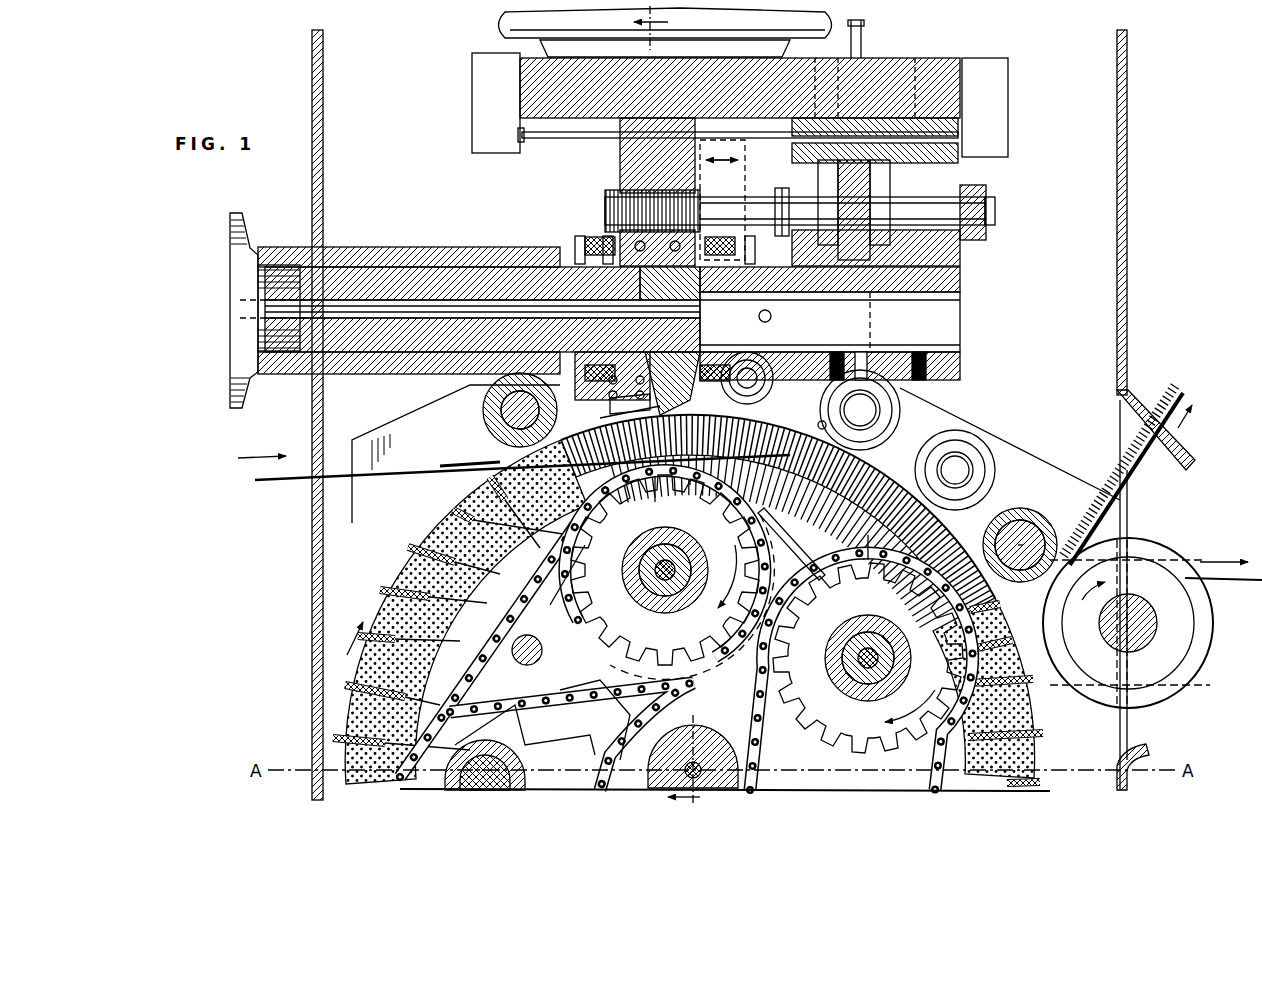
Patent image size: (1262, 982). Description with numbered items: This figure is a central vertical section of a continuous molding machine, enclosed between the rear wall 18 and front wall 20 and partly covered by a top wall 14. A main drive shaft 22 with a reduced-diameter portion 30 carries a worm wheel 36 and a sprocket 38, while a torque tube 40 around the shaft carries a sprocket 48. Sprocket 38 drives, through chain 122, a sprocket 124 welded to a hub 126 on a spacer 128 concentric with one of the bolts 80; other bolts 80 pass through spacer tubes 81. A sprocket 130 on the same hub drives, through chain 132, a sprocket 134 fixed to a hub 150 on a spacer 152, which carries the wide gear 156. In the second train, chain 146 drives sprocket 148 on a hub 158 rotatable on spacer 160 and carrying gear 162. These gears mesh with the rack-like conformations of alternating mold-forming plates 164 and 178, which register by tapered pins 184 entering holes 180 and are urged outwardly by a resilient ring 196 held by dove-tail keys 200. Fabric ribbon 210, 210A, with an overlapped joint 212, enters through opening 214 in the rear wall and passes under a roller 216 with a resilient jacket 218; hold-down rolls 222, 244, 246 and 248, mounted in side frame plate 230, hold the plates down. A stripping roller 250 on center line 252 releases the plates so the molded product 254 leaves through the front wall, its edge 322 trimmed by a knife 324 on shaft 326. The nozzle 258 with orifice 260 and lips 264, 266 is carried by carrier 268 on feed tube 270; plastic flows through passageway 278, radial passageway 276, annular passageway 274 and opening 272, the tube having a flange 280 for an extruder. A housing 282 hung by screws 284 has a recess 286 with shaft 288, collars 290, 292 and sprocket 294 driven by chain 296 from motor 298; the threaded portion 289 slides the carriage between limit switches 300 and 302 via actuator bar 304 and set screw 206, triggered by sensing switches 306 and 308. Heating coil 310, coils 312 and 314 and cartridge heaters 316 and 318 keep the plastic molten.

The top wall 14 is at (882, 73).
The rear wall 18 is at (311, 582).
The front wall 20 is at (1128, 303).
The main drive shaft 22 is at (700, 750).
The portion of reduced diameter 30 is at (710, 765).
The worm wheel 36 is at (725, 797).
The sprocket 38 is at (615, 712).
The torque tube 40 is at (714, 797).
The sprocket 48 is at (854, 671).
The bolts 80 is at (690, 560).
The spacer tubes 81 is at (520, 660).
The chain 122 is at (580, 695).
The sprocket 124 is at (490, 735).
The hub 126 is at (465, 765).
The spacer 128 is at (512, 782).
The sprocket 130 is at (389, 726).
The chain 132 is at (462, 690).
The sprocket 134 is at (556, 583).
The chain 146 is at (978, 763).
The sprocket 148 is at (882, 603).
The hub 150 is at (650, 600).
The spacer 152 is at (668, 520).
The gear 156 is at (512, 546).
The hub 158 is at (880, 625).
The spacer 160 is at (840, 644).
The gear 162 is at (717, 593).
The mold-forming plate 164 is at (455, 510).
The plate 178 is at (490, 480).
The slot or hole 180 is at (748, 638).
The tapered pin 184 is at (430, 555).
The resilient ring 196 is at (395, 580).
The dove-tail keys 200 is at (430, 516).
The set screw 206 is at (630, 142).
The fabric ribbon 210 is at (495, 455).
The fabric ribbon 210A is at (283, 478).
The overlapped joint 212 is at (450, 462).
The opening 214 is at (310, 457).
The roller 216 is at (510, 400).
The resilient jacket 218 is at (503, 412).
The hold-down roll 222 is at (590, 355).
The side frame plate 230 is at (955, 405).
The hold-down roll 244 is at (790, 350).
The hold-down roll 246 is at (895, 395).
The hold-down roll 248 is at (985, 460).
The stripping roller 250 is at (1020, 510).
The center line 252 is at (1058, 520).
The molded product 254 is at (1110, 520).
The nozzle 258 is at (610, 402).
The orifice 260 is at (790, 386).
The lip 264 is at (613, 416).
The lip 266 is at (747, 378).
The carrier 268 is at (830, 286).
The feed tube 270 is at (498, 290).
The opening 272 is at (684, 324).
The annular passageway 274 is at (672, 341).
The radial passageway 276 is at (652, 284).
The longitudinally extending passageway 278 is at (395, 275).
The flange 280 is at (228, 235).
The housing 282 is at (962, 248).
The screws 284 is at (963, 32).
The recess 286 is at (795, 211).
The shaft 288 is at (995, 210).
The threaded portion 289 is at (622, 200).
The collar 290 is at (782, 186).
The collar 292 is at (987, 190).
The sprocket 294 is at (872, 195).
The sprocket chain 296 is at (863, 45).
The motor 298 is at (503, 22).
The limit switch 300 is at (472, 85).
The limit switch 302 is at (1000, 113).
The actuator bar 304 is at (572, 140).
The sensing switch 306 is at (663, 488).
The sensing switch 308 is at (809, 414).
The heating coil 310 is at (348, 247).
The heating coil 312 is at (598, 236).
The heating coil 314 is at (712, 235).
The cartridge-type heater 316 is at (690, 314).
The cartridge-type heater 318 is at (663, 349).
The longitudinal edge portion 322 is at (1245, 582).
The knife 324 is at (1190, 560).
The shaft 326 is at (1142, 587).